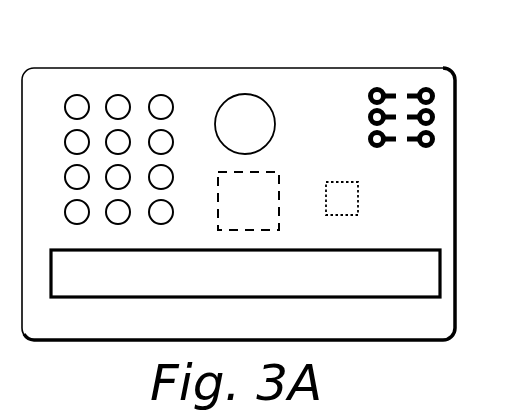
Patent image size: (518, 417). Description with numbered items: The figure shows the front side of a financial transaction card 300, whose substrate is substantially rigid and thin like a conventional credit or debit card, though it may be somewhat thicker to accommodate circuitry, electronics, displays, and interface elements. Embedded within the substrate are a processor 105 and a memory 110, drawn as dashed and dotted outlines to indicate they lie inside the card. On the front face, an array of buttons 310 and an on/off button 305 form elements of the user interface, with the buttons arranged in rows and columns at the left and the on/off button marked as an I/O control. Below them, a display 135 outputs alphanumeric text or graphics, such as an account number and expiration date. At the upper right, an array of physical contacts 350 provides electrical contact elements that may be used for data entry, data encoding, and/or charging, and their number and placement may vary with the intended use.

The financial transaction card 300 is at (382, 68).
The on/off button 305 is at (245, 96).
The array of buttons 310 is at (50, 85).
The processor 105 is at (270, 172).
The memory 110 is at (346, 215).
The display 135 is at (280, 297).
The array of physical contacts 350 is at (427, 145).